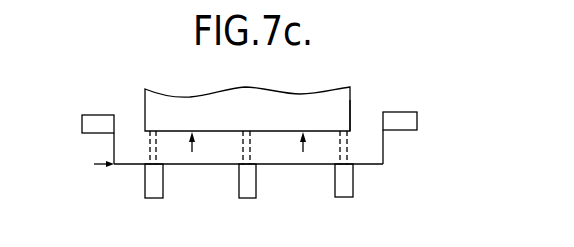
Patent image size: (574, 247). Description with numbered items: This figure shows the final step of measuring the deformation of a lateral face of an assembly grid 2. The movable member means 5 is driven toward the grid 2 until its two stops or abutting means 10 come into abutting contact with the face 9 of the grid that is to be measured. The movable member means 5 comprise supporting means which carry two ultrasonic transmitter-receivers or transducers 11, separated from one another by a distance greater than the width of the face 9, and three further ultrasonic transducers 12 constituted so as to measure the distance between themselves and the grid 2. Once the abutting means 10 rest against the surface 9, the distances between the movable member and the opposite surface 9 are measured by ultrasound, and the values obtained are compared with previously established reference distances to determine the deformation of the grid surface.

The grid 2 is at (166, 107).
The face of the grid 9 is at (328, 129).
The ultrasonic transducer 11 is at (88, 123).
The movable member means 5 is at (97, 166).
The abutting means 10 is at (193, 152).
The ultrasonic transducer 12 is at (152, 185).